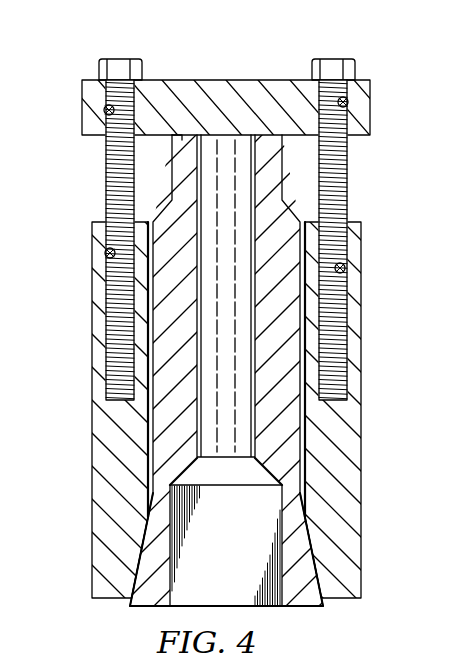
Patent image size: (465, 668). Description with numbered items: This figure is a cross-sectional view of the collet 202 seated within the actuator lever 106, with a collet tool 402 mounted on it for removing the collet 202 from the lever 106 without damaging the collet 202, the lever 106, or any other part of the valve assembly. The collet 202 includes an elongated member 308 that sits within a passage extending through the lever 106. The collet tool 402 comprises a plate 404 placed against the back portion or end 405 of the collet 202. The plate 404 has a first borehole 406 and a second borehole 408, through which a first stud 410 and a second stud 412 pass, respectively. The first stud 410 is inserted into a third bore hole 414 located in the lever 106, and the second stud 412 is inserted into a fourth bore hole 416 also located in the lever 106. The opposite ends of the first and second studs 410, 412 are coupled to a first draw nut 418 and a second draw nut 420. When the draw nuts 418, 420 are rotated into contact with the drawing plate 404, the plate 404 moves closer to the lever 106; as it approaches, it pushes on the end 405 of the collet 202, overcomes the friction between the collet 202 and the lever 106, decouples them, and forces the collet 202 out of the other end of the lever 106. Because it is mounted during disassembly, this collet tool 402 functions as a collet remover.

The collet tool 402 is at (232, 339).
The plate 404 is at (252, 80).
The end of the collet 405 is at (183, 137).
The first borehole 406 is at (104, 111).
The second borehole 408 is at (349, 103).
The first stud 410 is at (106, 163).
The second stud 412 is at (349, 165).
The third bore hole 414 is at (105, 251).
The fourth bore hole 416 is at (346, 269).
The first draw nut 418 is at (98, 70).
The second draw nut 420 is at (357, 72).
The lever 106 is at (92, 362).
The elongated member 308 is at (153, 435).
The collet 202 is at (304, 614).